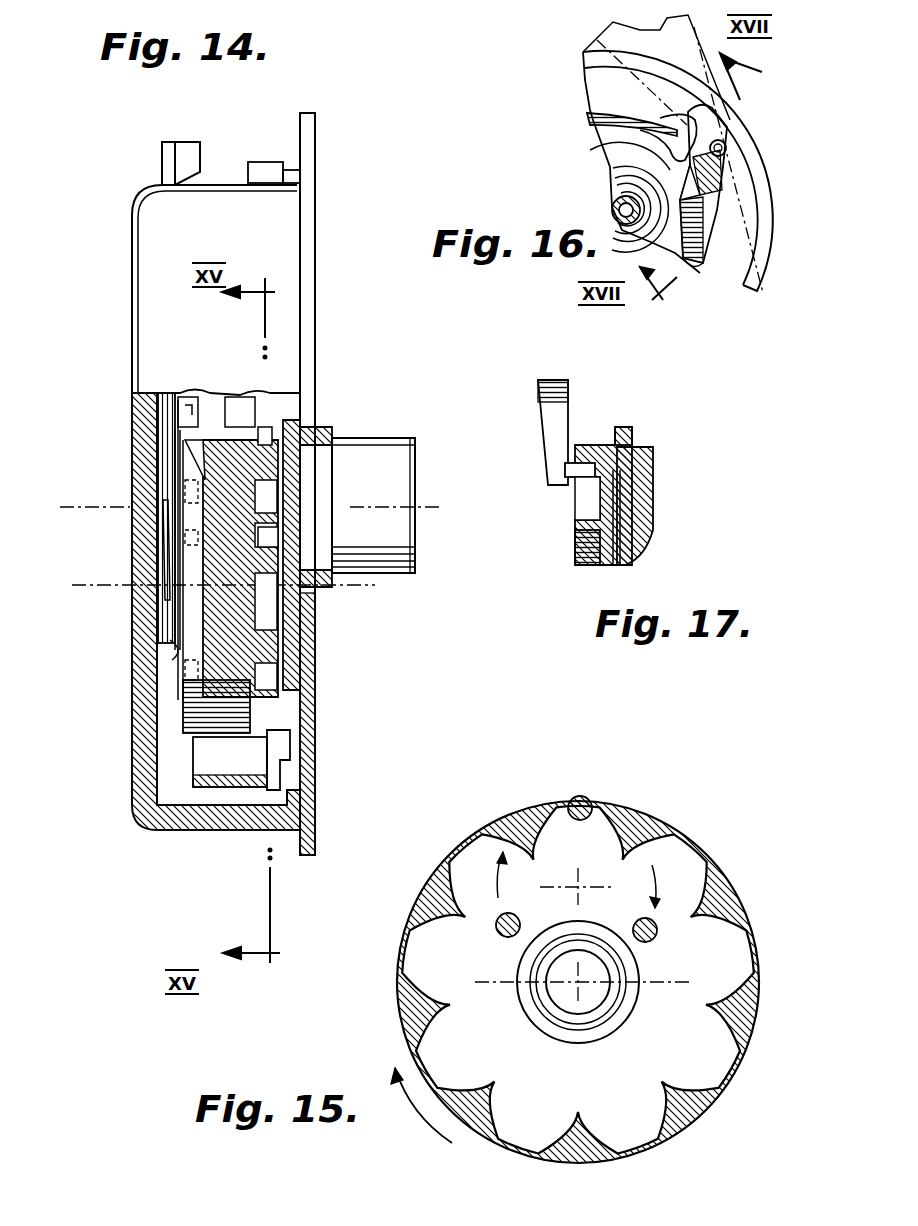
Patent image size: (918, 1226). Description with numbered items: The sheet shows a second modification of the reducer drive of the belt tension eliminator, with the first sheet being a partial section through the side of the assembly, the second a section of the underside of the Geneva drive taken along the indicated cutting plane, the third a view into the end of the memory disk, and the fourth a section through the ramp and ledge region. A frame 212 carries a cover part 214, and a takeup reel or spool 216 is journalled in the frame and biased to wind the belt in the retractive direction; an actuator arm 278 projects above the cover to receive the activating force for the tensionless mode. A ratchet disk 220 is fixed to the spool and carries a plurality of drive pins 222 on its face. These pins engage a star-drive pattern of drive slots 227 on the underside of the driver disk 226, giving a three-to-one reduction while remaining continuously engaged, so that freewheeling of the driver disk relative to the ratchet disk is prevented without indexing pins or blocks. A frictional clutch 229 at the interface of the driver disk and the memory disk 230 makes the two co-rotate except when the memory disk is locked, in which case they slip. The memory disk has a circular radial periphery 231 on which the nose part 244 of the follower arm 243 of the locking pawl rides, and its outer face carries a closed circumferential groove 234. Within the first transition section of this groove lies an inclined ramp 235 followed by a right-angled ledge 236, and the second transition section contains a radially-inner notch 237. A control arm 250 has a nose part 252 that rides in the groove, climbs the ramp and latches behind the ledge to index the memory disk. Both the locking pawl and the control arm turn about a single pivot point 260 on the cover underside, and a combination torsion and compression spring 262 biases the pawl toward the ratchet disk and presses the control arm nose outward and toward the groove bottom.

In FIG. 14, the frame 212 is at (303, 183).
In FIG. 14, the cover part 214 is at (156, 224).
In FIG. 14, the takeup reel or spool 216 is at (393, 552).
In FIG. 14, the ratchet disk 220 is at (290, 757).
In FIG. 14, the drive pins 222 is at (270, 393).
In FIG. 15, the drive pins 222 is at (586, 798).
In FIG. 14, the driver disk 226 is at (260, 712).
In FIG. 17, the driver disk 226 is at (632, 533).
In FIG. 15, the driver disk 226 is at (400, 950).
In FIG. 14, the drive slots 227 is at (268, 498).
In FIG. 15, the drive slots 227 is at (692, 870).
In FIG. 14, the frictional clutch 229 is at (313, 455).
In FIG. 17, the frictional clutch 229 is at (643, 477).
In FIG. 14, the memory disk 230 is at (153, 813).
In FIG. 16, the memory disk 230 is at (595, 88).
In FIG. 17, the memory disk 230 is at (632, 435).
In FIG. 14, the circular radial periphery 231 is at (188, 700).
In FIG. 17, the circular radial periphery 231 is at (590, 445).
In FIG. 14, the circumferential groove 234 is at (173, 488).
In FIG. 16, the circumferential groove 234 is at (700, 267).
In FIG. 16, the inclined ramp 235 is at (703, 147).
In FIG. 17, the inclined ramp 235 is at (580, 490).
In FIG. 16, the right-angled ledge 236 is at (700, 205).
In FIG. 17, the right-angled ledge 236 is at (578, 540).
In FIG. 16, the radially-inner notch 237 is at (637, 123).
In FIG. 14, the follower arm 243 is at (198, 392).
In FIG. 14, the nose part 244 is at (242, 390).
In FIG. 16, the control arm 250 is at (597, 40).
In FIG. 17, the control arm 250 is at (556, 380).
In FIG. 16, the nose part 252 is at (722, 145).
In FIG. 17, the nose part 252 is at (575, 468).
In FIG. 14, the pivot point 260 is at (160, 597).
In FIG. 15, the pivot point 260 is at (593, 990).
In FIG. 14, the combination torsion and compression spring 262 is at (172, 645).
In FIG. 14, the actuator arm 278 is at (185, 150).